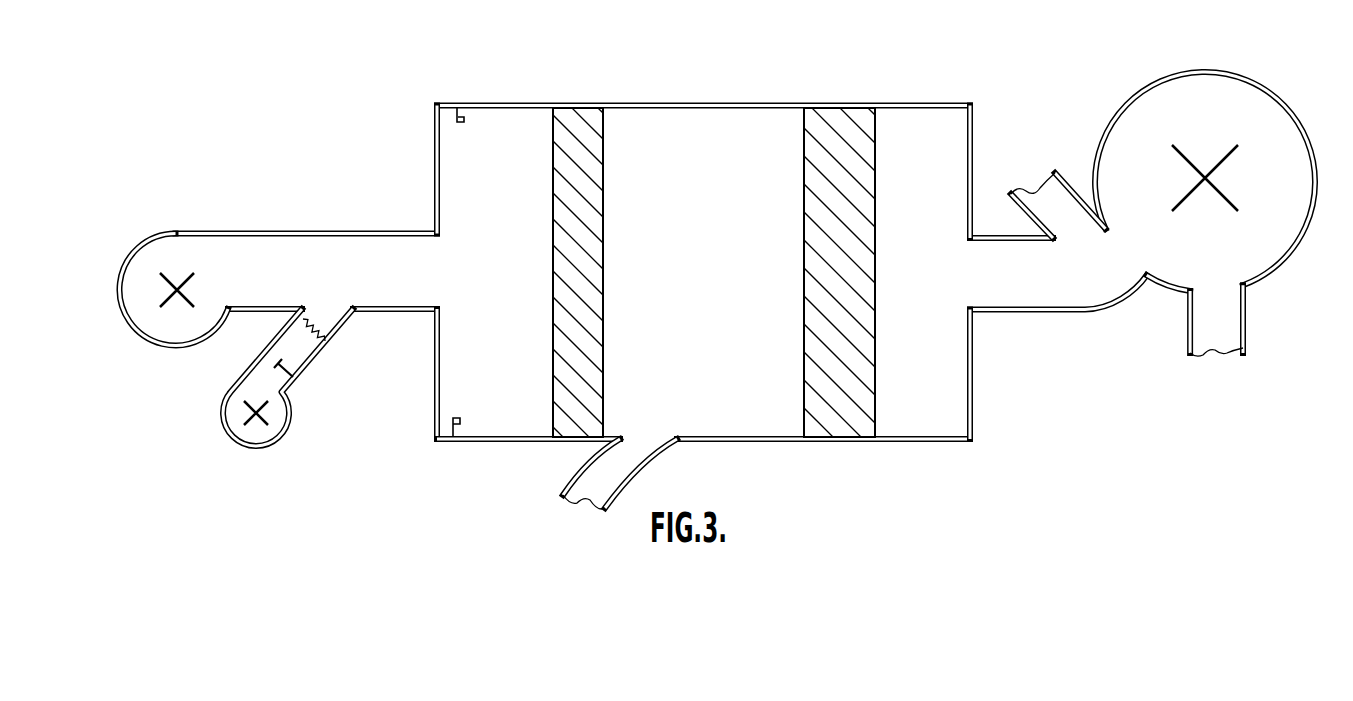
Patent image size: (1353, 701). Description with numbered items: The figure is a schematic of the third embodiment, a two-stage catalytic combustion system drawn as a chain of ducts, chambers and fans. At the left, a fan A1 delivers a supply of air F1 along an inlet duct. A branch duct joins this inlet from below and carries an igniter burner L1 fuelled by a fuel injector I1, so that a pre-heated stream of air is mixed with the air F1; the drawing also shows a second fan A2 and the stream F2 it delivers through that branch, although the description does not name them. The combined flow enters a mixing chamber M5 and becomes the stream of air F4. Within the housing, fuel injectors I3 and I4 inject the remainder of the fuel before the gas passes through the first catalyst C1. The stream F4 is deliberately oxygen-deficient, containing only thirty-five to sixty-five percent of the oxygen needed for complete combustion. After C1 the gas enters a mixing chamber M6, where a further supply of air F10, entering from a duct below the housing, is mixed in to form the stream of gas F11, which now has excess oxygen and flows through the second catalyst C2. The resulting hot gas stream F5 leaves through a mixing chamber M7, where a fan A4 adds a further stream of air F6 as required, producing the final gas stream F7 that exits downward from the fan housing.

The fan A1 is at (177, 332).
The second fan A2 is at (288, 398).
The fan A4 is at (1220, 80).
The catalyst C1 is at (577, 112).
The second catalyst C2 is at (843, 113).
The supply of air F1 is at (293, 272).
The air flow from second fan F2 is at (338, 295).
The stream of air F4 is at (478, 273).
The hot gas stream F5 is at (1050, 273).
The further stream of air F6 is at (1077, 232).
The final gas stream F7 is at (1215, 295).
The further supply of air F10 is at (630, 450).
The stream of gas F11 is at (783, 271).
The fuel injector I1 is at (297, 369).
The fuel injector I3 is at (472, 125).
The fuel injector I4 is at (469, 429).
The igniter burner L1 is at (323, 344).
The mixing chamber M5 is at (437, 369).
The mixing chamber M6 is at (755, 425).
The mixing chamber M7 is at (945, 407).